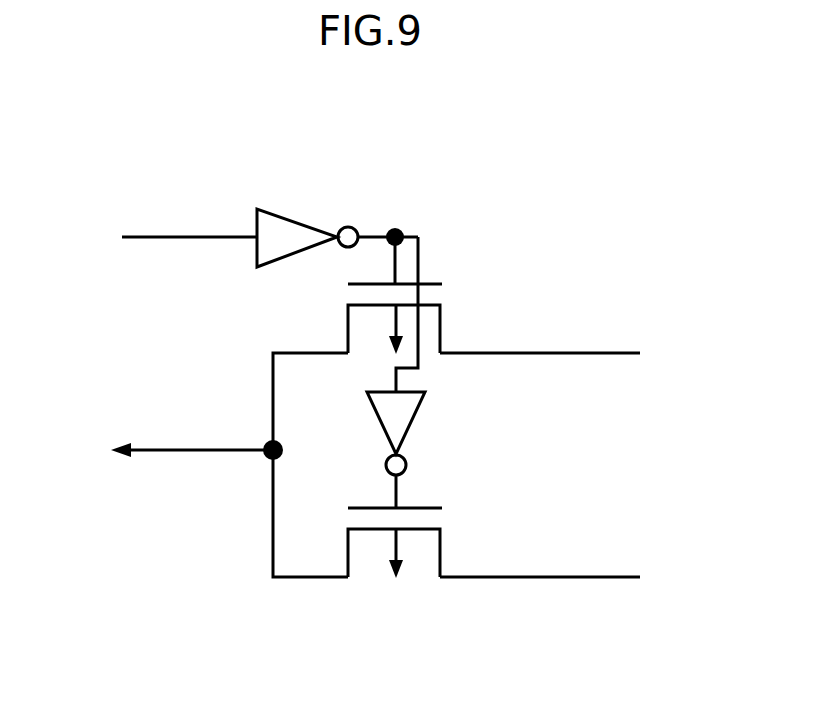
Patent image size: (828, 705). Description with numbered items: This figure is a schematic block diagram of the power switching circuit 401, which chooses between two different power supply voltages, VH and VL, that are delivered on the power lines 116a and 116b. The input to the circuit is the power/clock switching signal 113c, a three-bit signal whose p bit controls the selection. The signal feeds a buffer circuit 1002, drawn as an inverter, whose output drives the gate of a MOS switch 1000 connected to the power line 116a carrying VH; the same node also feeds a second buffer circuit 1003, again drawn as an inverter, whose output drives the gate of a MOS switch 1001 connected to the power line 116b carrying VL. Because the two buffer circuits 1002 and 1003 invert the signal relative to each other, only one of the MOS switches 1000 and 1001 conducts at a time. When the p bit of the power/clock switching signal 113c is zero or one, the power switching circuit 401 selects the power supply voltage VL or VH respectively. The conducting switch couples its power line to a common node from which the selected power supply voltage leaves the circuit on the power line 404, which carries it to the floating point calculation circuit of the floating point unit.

The power switching circuit 401 is at (408, 115).
The power/clock switching signal 113c is at (137, 236).
The buffer circuit 1002 is at (300, 219).
The MOS switch 1000 is at (442, 330).
The buffer circuit 1003 is at (412, 415).
The MOS switch 1001 is at (442, 550).
The power line 404 is at (135, 448).
The power line 116a is at (580, 352).
The power line 116b is at (580, 577).